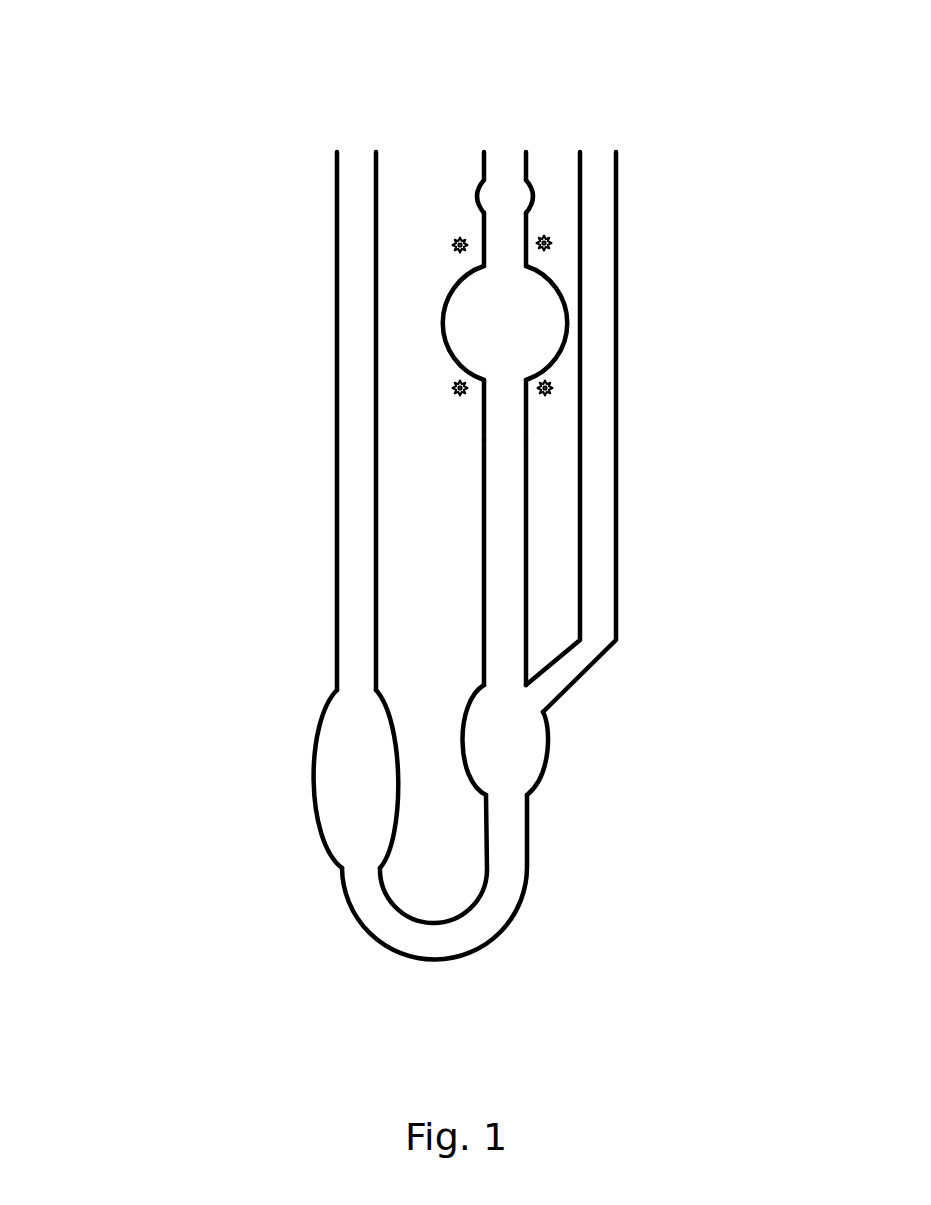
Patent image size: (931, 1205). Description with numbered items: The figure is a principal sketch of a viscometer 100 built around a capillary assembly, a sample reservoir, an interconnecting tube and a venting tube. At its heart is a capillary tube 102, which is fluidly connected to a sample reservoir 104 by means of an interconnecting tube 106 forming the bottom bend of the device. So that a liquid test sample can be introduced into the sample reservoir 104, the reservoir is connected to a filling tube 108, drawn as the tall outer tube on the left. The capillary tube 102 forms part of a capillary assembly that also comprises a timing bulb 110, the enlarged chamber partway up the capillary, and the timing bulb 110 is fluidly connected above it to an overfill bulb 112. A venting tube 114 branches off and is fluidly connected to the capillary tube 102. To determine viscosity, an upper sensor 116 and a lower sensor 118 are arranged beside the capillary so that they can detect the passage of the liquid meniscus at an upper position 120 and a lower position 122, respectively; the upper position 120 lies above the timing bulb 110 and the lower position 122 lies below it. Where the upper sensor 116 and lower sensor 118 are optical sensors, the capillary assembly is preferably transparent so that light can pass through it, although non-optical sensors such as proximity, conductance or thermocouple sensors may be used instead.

The viscometer 100 is at (186, 223).
The capillary tube 102 is at (479, 480).
The sample reservoir 104 is at (342, 743).
The interconnecting tube 106 is at (415, 933).
The filling tube 108 is at (348, 543).
The timing bulb 110 is at (480, 341).
The overfill bulb 112 is at (500, 198).
The venting tube 114 is at (598, 502).
The upper sensor 116 is at (555, 243).
The lower sensor 118 is at (556, 387).
The upper position 120 is at (498, 247).
The lower position 122 is at (503, 390).